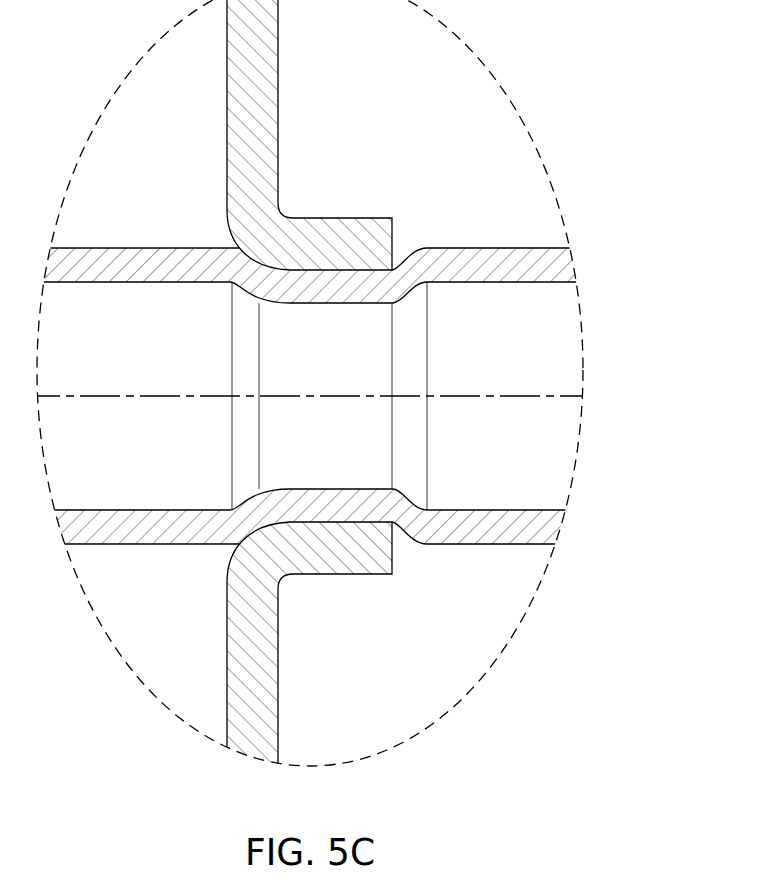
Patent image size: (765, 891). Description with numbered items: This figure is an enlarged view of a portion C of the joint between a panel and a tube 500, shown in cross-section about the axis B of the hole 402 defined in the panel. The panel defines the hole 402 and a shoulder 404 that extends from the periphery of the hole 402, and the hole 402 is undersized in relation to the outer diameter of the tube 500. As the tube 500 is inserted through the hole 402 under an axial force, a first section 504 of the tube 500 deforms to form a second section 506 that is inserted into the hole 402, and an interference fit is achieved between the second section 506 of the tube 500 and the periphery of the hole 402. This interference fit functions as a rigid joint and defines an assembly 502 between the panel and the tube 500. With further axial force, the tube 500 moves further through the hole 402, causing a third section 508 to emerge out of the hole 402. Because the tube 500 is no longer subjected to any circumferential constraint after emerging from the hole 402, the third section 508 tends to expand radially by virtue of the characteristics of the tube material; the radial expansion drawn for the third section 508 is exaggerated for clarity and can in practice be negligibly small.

The tube 500 is at (531, 238).
The hole 402 is at (219, 242).
The shoulder 404 is at (344, 233).
The assembly 502 is at (405, 240).
The first section 504 is at (138, 535).
The second section 506 is at (405, 521).
The third section 508 is at (497, 535).
The axis B is at (562, 397).
The portion C is at (477, 53).